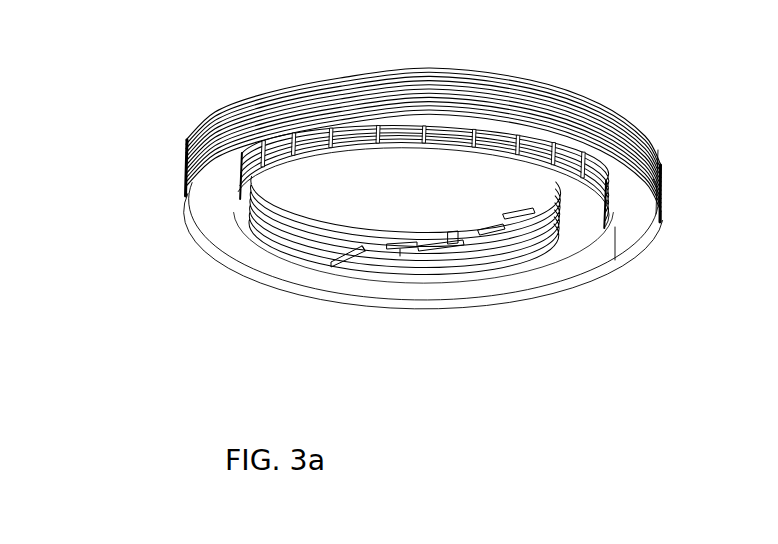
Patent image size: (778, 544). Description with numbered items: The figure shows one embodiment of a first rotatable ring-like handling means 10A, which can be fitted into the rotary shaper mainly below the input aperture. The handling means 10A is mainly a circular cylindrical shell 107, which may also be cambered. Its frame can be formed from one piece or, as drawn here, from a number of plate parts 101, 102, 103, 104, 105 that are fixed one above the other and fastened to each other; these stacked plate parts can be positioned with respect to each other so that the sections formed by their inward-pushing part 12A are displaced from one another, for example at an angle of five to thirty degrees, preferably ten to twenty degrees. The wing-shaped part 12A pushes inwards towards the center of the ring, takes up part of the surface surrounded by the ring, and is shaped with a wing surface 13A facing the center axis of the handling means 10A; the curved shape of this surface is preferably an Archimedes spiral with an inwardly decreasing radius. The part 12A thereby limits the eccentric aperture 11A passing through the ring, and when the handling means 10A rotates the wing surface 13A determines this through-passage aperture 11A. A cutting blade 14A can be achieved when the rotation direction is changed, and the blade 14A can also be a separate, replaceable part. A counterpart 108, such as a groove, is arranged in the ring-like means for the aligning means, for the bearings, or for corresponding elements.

The ring-like handling means 10A is at (220, 80).
The eccentric aperture 11A is at (398, 185).
The wing-shaped part 12A is at (368, 272).
The wing surface 13A is at (270, 223).
The cutting blade 14A is at (352, 257).
The plate part 101 is at (393, 272).
The plate part 102 is at (433, 253).
The plate part 103 is at (472, 245).
The plate part 104 is at (495, 235).
The plate part 105 is at (515, 212).
The circular cylindrical shell 107 is at (185, 155).
The counterpart 108 is at (218, 207).